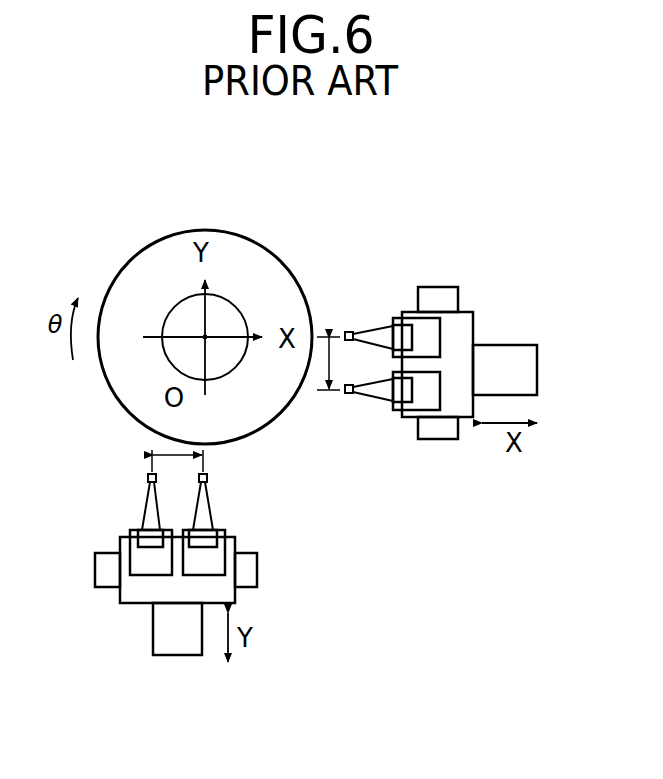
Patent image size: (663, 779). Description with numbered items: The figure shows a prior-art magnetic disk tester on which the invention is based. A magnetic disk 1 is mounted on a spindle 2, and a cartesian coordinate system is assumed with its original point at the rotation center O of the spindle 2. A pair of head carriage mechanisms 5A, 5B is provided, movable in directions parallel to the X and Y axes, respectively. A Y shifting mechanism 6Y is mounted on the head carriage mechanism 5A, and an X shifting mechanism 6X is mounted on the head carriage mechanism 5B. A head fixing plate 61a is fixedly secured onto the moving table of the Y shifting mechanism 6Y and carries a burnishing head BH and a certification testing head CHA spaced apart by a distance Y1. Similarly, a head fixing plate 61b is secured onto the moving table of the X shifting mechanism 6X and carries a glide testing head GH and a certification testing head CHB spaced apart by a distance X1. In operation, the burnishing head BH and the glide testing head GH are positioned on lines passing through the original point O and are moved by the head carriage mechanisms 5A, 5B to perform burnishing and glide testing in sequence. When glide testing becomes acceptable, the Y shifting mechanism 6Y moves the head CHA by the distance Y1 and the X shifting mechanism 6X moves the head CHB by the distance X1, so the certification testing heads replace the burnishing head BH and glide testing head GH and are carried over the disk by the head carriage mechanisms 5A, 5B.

The wafer (disk) 1 is at (163, 250).
The spindle 2 is at (168, 348).
The Y shifting mechanism 6Y is at (431, 336).
The head fixing plate 61a is at (466, 318).
The head carriage mechanism 5A is at (525, 360).
The burnishing head BH is at (349, 331).
The certification testing head CHA is at (349, 394).
The distance Y1 is at (337, 363).
The X shifting mechanism 6X is at (189, 553).
The head fixing plate 61b is at (130, 592).
The certification testing head CHB is at (148, 478).
The glide testing head GH is at (207, 478).
The head carriage mechanism 5B is at (163, 631).
The distance X1 is at (177, 468).